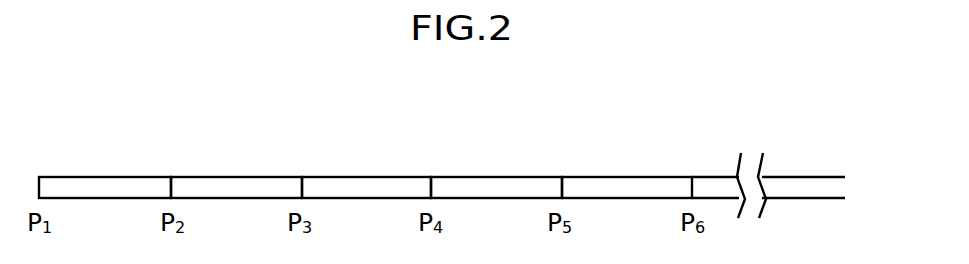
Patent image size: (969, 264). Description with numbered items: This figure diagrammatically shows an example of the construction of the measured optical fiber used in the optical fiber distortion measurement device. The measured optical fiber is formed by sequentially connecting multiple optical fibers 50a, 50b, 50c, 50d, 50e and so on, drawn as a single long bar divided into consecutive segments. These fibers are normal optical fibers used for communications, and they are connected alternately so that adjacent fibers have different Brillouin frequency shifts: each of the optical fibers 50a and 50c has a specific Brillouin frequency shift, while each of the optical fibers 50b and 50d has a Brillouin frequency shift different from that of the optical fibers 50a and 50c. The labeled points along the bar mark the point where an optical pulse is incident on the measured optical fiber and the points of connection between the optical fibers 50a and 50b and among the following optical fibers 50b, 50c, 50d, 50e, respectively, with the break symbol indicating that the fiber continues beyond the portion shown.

The optical fiber 50a is at (140, 176).
The optical fiber 50b is at (271, 176).
The optical fiber 50c is at (402, 176).
The optical fiber 50d is at (531, 176).
The optical fiber 50e is at (662, 176).